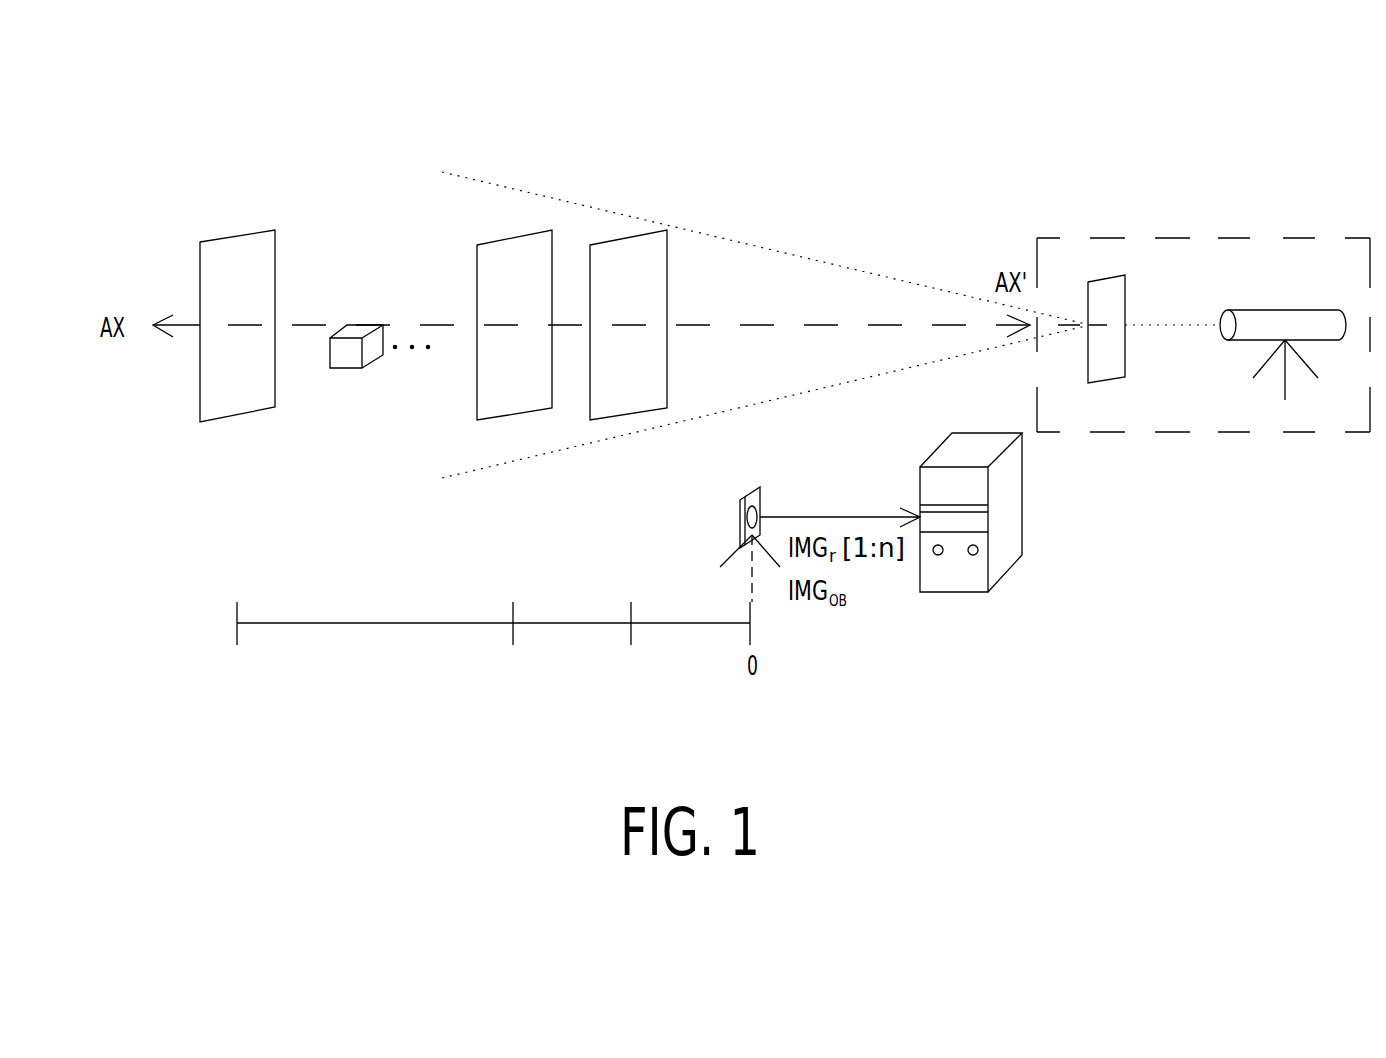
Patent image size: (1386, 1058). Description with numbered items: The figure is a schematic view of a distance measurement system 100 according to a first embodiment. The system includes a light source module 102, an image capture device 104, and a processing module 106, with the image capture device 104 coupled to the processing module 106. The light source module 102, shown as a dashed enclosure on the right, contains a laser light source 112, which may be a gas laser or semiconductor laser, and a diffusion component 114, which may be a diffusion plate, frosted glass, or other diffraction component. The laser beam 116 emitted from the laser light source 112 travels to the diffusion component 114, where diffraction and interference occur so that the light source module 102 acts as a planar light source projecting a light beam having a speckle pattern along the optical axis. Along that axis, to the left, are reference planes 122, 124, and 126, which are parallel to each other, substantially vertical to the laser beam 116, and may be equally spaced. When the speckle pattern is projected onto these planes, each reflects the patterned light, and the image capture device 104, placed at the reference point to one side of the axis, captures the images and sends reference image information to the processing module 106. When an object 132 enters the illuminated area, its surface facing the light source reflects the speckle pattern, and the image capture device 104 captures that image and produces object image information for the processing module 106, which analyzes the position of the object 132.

The distance measurement system 100 is at (157, 120).
The light source module 102 is at (1170, 232).
The image capture device 104 is at (778, 473).
The processing module 106 is at (1022, 500).
The laser light source 112 is at (1287, 310).
The diffusion component 114 is at (1112, 280).
The laser beam 116 is at (1173, 317).
The reference plane 122 is at (632, 232).
The reference plane 124 is at (517, 232).
The reference plane 126 is at (242, 233).
The object 132 is at (358, 332).